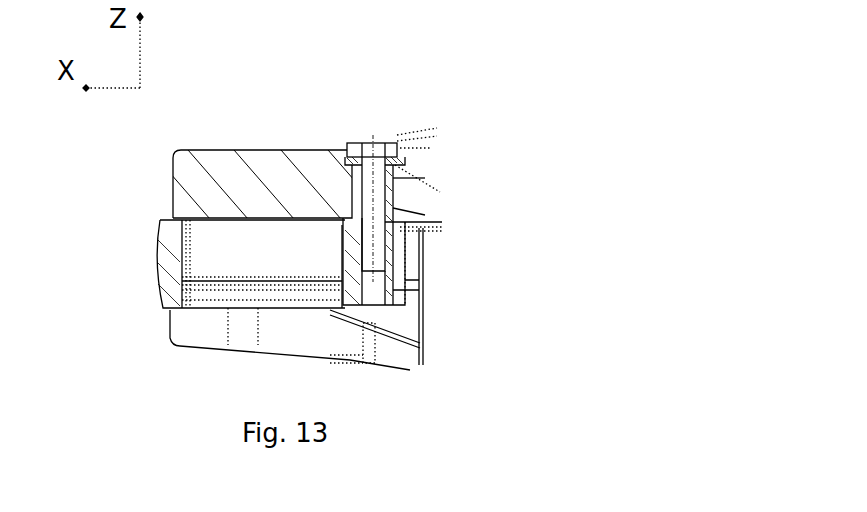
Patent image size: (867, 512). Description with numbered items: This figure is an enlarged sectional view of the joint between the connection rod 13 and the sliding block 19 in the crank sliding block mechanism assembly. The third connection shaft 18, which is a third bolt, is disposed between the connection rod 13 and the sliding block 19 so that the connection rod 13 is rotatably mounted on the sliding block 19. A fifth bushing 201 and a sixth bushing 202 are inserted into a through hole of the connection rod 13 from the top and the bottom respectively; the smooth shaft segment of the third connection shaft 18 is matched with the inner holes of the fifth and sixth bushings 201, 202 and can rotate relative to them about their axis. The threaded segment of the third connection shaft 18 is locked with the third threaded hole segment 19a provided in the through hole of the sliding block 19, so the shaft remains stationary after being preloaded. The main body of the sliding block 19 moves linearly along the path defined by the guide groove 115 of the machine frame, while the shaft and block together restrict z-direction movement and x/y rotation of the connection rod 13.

The connection rod 13 is at (260, 164).
The third connection shaft 18 is at (392, 143).
The fifth bushing 201 is at (396, 177).
The sixth bushing 202 is at (396, 208).
The third threaded hole segment 19a is at (396, 250).
The sliding block 19 is at (342, 310).
The guide groove 115 is at (228, 265).